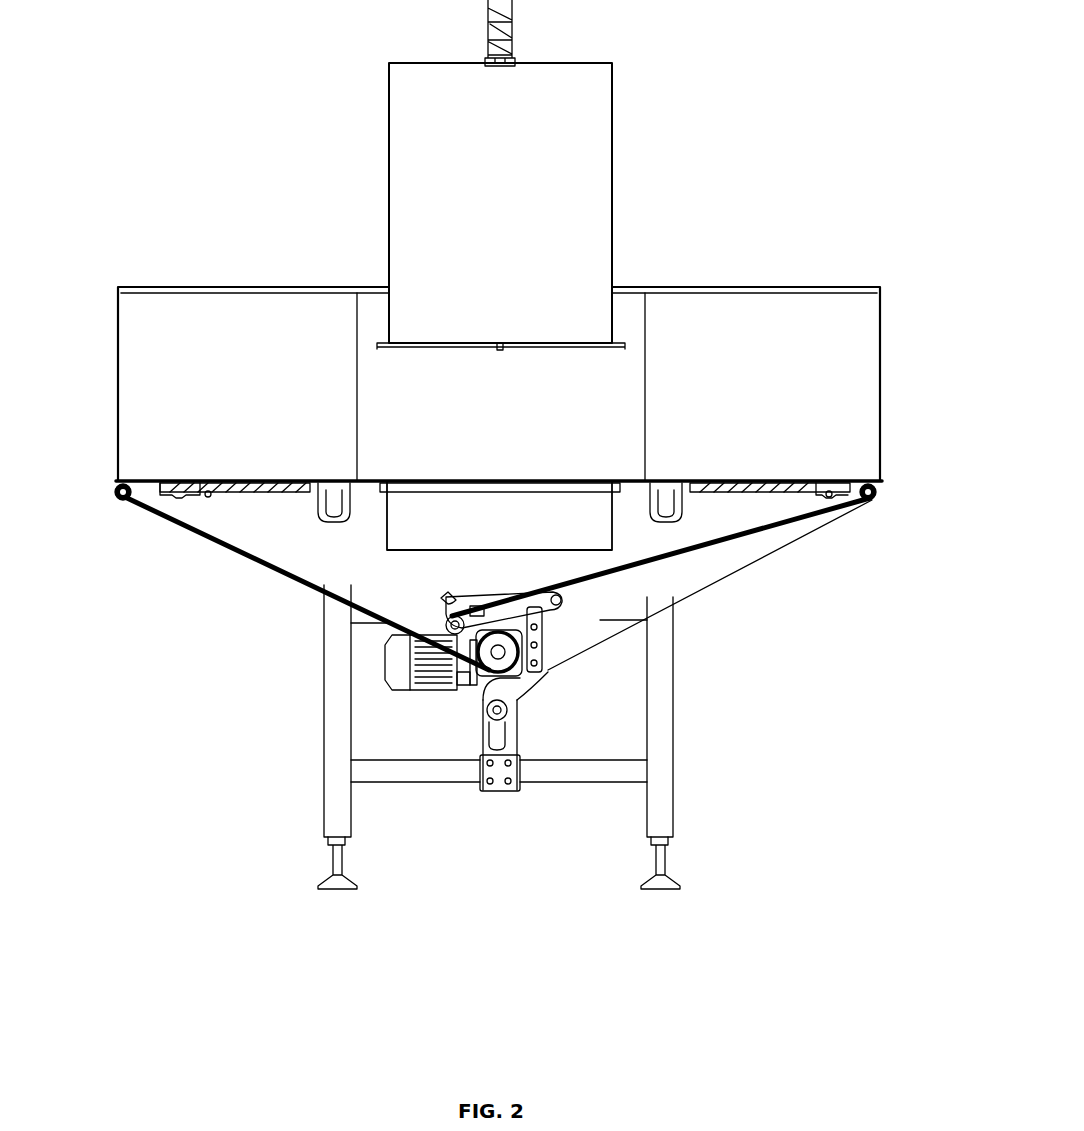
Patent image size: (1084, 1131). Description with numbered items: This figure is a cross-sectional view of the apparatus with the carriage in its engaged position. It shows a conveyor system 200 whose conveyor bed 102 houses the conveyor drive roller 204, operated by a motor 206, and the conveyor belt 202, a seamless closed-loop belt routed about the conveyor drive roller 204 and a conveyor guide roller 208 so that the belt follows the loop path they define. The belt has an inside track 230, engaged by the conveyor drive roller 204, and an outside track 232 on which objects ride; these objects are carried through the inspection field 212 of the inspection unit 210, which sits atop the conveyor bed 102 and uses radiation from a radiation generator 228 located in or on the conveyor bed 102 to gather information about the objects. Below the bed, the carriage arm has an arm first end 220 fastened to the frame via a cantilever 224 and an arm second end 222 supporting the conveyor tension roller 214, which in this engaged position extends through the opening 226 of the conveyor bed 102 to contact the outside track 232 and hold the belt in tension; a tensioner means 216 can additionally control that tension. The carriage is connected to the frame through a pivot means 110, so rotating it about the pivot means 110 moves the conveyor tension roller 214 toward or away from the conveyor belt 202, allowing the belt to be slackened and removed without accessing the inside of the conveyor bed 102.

The conveyor bed 102 is at (217, 518).
The pivot means 110 is at (501, 712).
The conveyor system 200 is at (672, 461).
The conveyor belt 202 is at (640, 565).
The conveyor drive roller 204 is at (497, 650).
The motor 206 is at (425, 678).
The conveyor guide roller 208 is at (872, 498).
The inspection unit 210 is at (520, 155).
The inspection field 212 is at (518, 415).
The conveyor tension roller 214 is at (445, 616).
The tensioner means 216 is at (517, 615).
The arm first end 220 is at (457, 596).
The arm second end 222 is at (503, 732).
The cantilever 224 is at (508, 748).
The opening 226 is at (577, 660).
The radiation generator 228 is at (420, 516).
The inside track 230 is at (772, 522).
The outside track 232 is at (722, 550).